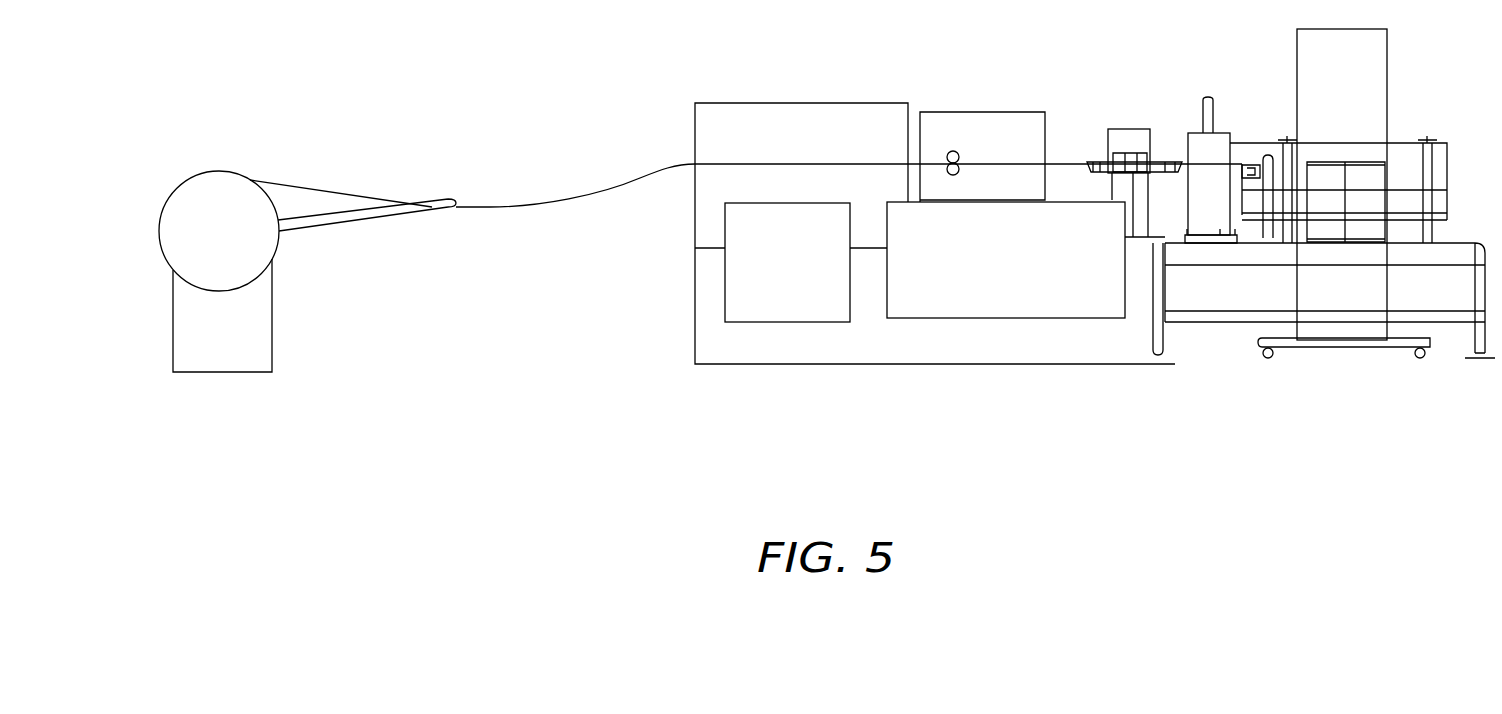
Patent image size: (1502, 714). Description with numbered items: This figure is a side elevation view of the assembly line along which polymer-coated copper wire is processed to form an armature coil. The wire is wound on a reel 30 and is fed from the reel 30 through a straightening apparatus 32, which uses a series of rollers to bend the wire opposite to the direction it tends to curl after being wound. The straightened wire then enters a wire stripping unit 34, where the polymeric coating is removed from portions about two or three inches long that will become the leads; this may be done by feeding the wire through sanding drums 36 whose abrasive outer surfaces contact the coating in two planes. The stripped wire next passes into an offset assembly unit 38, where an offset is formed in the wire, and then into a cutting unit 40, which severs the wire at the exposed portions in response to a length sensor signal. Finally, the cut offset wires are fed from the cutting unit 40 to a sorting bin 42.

The reel 30 is at (279, 251).
The straightening apparatus 32 is at (697, 222).
The wire stripping unit 34 is at (999, 106).
The sanding drums 36 is at (953, 150).
The offset assembly unit 38 is at (1126, 128).
The cutting unit 40 is at (1219, 245).
The sorting bin 42 is at (1347, 325).